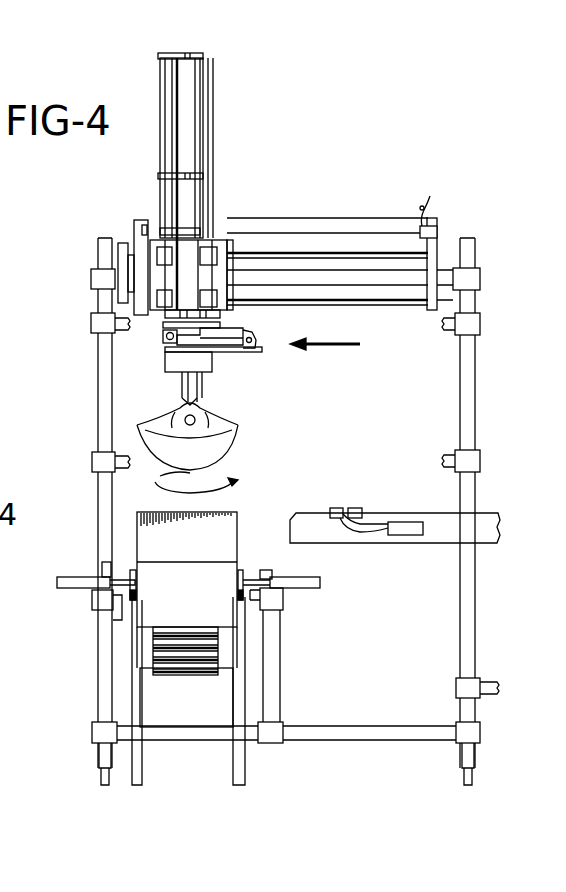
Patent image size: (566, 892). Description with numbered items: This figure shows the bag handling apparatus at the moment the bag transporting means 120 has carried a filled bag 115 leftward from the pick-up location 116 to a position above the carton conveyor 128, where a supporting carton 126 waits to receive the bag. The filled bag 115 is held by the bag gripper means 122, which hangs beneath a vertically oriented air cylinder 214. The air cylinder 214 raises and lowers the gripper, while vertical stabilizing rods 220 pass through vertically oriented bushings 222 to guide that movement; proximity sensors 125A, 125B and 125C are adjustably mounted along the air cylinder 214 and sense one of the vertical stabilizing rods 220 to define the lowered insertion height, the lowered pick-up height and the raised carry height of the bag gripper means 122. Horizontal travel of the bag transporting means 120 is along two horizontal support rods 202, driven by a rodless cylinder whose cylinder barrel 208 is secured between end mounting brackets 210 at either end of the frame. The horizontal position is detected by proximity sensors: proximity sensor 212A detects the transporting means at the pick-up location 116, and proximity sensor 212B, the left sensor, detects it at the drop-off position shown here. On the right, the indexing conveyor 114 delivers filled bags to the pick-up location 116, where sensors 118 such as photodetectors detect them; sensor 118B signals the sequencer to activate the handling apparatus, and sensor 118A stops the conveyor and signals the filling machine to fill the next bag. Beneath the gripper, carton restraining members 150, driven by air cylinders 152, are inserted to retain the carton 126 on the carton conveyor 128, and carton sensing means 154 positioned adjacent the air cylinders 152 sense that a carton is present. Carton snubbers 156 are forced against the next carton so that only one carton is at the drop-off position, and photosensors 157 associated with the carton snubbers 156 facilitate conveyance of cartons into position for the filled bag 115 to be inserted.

The indexing conveyor 114 is at (436, 532).
The filled bag 115 is at (215, 412).
The pick-up location 116 is at (354, 505).
The sensors 118 is at (339, 520).
The sensor 118A is at (330, 508).
The sensor 118B is at (362, 508).
The bag transporting means 120 is at (242, 320).
The bag gripper means 122 is at (230, 362).
The proximity sensor 125A is at (158, 230).
The proximity sensor 125B is at (158, 172).
The proximity sensor 125C is at (160, 50).
The supporting carton 126 is at (215, 550).
The carton conveyor 128 is at (190, 668).
The carton restraining members 150 is at (238, 592).
The air cylinders 152 is at (66, 590).
The carton sensing means 154 is at (106, 566).
The carton snubbers 156 is at (115, 602).
The photosensors 157 is at (118, 642).
The horizontal support rods 202 is at (325, 300).
The cylinder barrel 208 is at (402, 278).
The end mounting brackets 210 is at (112, 275).
The proximity sensor 212A is at (440, 222).
The proximity sensor 212B is at (140, 232).
The air cylinder 214 is at (185, 110).
The vertical stabilizing rods 220 is at (162, 85).
The bushings 222 is at (222, 252).